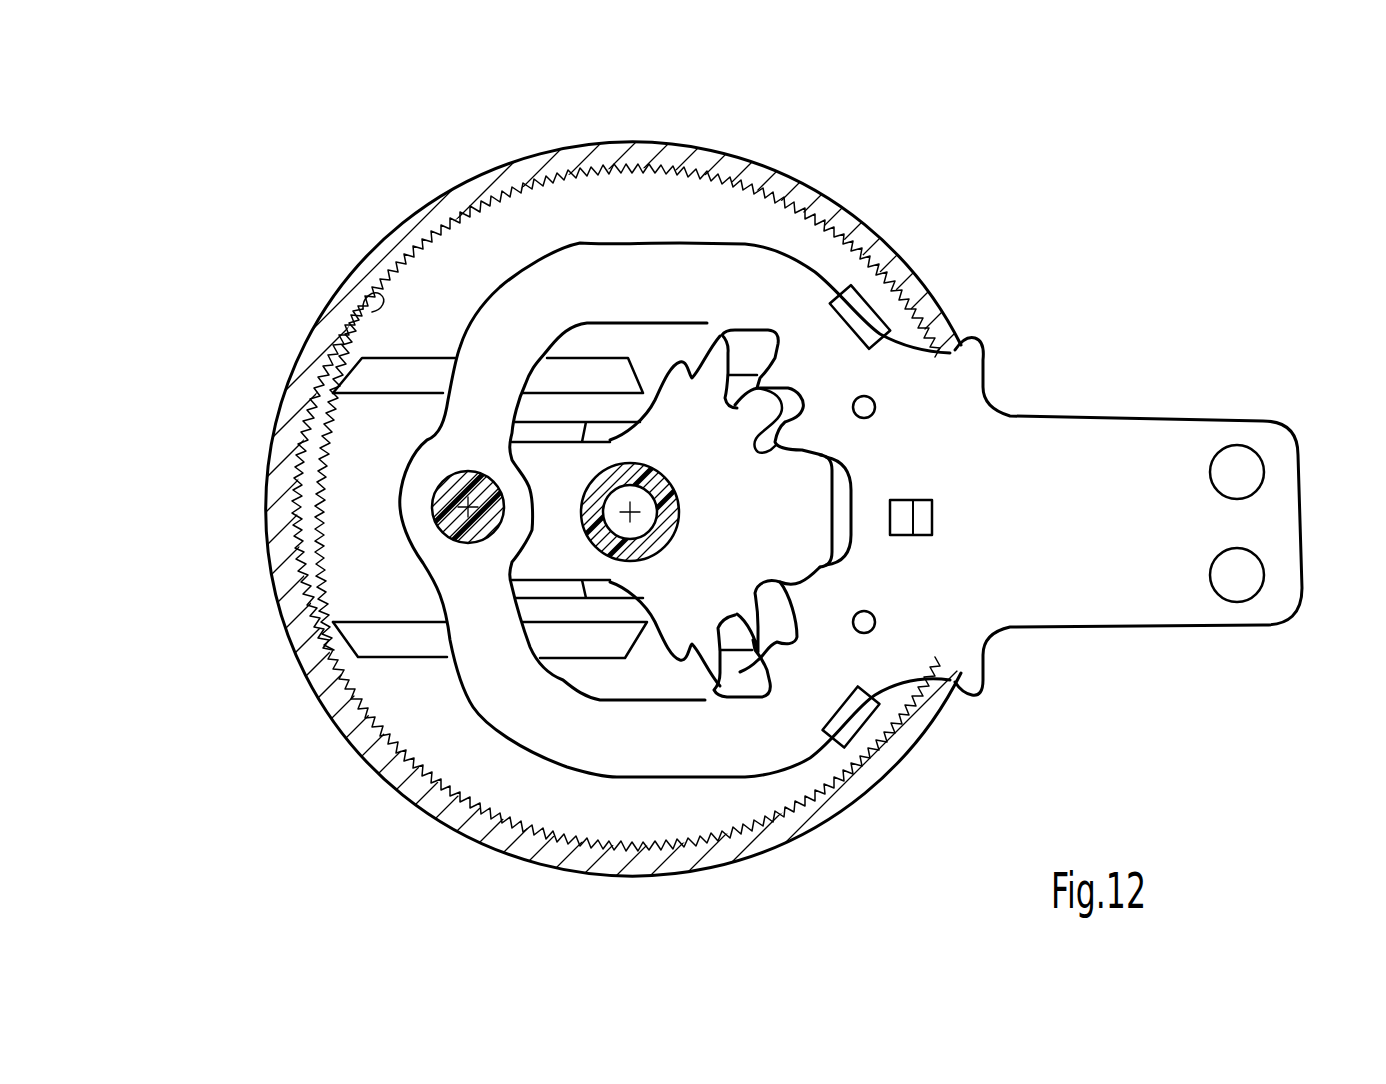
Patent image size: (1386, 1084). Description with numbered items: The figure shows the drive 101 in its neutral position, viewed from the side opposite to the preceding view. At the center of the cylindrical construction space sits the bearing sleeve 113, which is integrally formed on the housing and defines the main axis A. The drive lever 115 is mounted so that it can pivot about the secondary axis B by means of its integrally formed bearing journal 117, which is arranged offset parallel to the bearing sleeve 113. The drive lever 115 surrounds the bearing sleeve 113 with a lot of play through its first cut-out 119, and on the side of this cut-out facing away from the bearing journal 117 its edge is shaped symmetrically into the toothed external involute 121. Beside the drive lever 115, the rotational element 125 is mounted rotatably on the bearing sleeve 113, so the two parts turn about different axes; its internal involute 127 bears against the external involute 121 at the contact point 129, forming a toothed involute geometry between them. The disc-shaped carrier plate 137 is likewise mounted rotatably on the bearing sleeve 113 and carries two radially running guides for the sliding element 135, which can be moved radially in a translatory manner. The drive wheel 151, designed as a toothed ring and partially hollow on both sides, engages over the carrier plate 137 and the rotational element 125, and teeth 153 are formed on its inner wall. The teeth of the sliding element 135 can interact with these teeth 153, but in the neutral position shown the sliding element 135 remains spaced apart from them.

The drive 101 is at (1200, 290).
The drive wheel 151 is at (468, 197).
The teeth 153 is at (352, 308).
The contact point 129 is at (807, 580).
The drive lever 115 is at (673, 740).
The carrier plate 137 is at (387, 375).
The sliding element 135 is at (357, 456).
The first cut-out 119 is at (657, 350).
The internal involute 127 is at (747, 393).
The toothed external involute 121 is at (762, 337).
The rotational element 125 is at (768, 513).
The bearing journal 117 is at (452, 522).
The secondary axis B is at (458, 511).
The bearing sleeve 113 is at (600, 553).
The main axis A is at (630, 525).